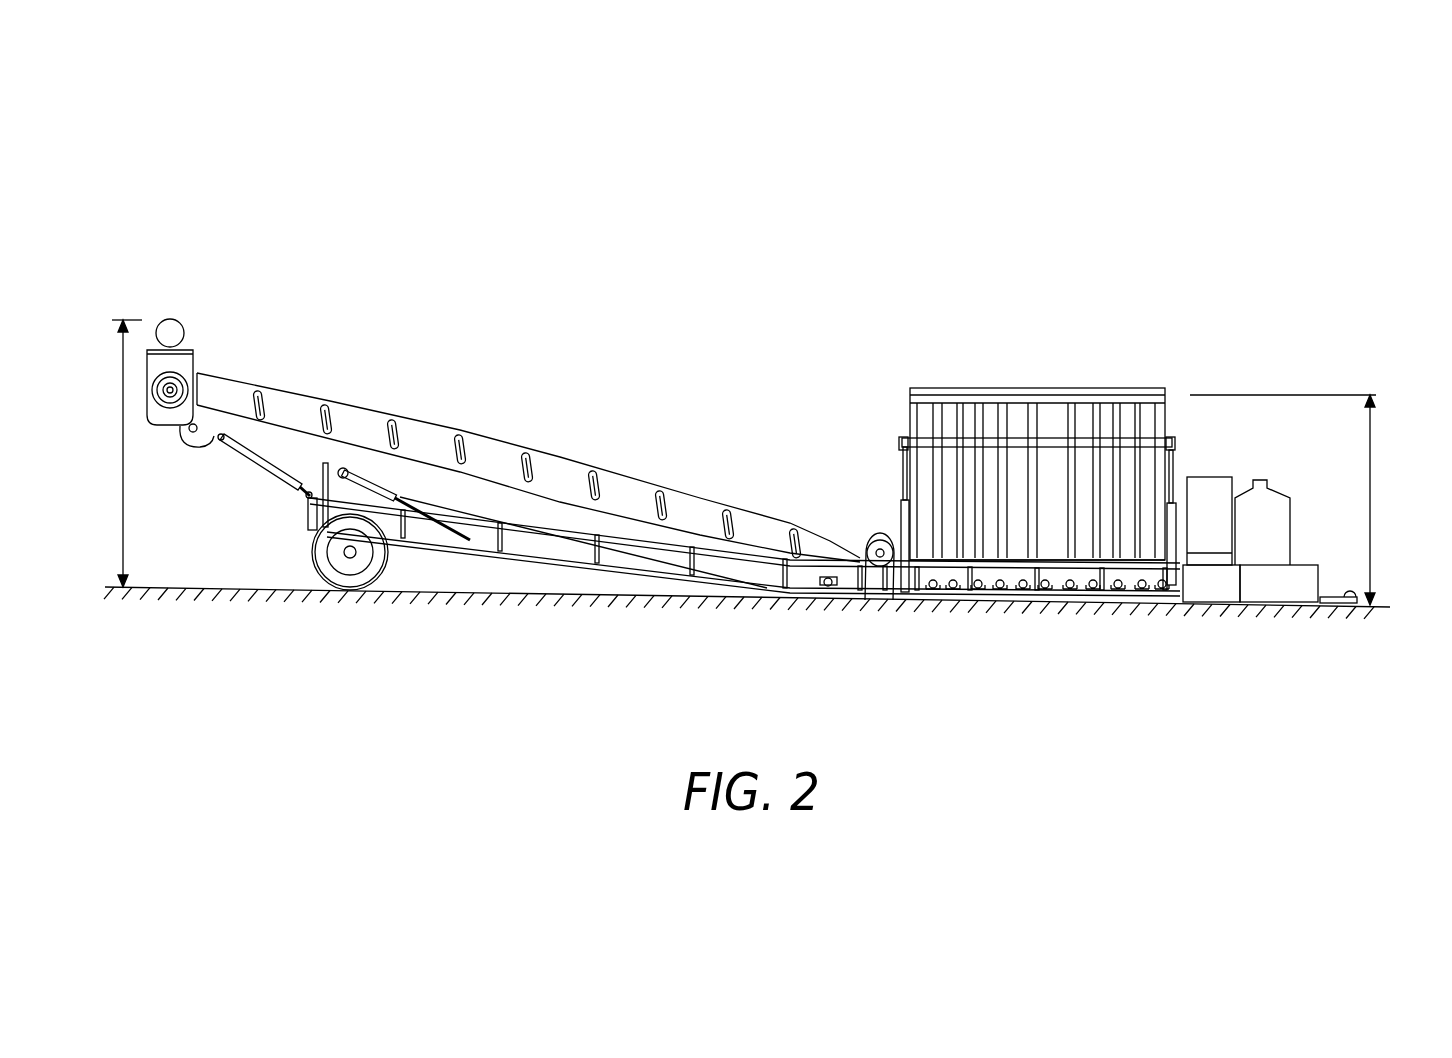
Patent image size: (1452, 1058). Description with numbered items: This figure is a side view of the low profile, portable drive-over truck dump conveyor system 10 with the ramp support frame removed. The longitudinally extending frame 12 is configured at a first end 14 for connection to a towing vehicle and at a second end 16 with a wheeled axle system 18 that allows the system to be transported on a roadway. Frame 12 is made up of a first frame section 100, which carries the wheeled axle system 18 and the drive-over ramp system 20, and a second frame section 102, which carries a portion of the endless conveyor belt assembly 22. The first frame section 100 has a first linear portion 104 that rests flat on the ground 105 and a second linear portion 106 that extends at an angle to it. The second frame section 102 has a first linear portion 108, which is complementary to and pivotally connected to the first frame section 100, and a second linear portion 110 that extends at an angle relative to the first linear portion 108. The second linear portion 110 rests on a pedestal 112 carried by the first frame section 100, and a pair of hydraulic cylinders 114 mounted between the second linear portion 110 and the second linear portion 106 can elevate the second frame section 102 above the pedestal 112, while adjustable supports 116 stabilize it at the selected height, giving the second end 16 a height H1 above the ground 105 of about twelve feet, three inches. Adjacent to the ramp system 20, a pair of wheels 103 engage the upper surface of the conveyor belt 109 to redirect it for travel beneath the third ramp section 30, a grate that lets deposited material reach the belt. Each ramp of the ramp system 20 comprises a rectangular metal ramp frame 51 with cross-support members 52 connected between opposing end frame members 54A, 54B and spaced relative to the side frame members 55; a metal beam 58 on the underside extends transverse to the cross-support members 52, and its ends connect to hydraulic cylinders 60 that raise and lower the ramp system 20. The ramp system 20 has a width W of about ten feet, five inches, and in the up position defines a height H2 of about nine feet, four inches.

The conveyor system 10 is at (758, 318).
The frame 12 is at (992, 612).
The first end 14 is at (1366, 580).
The second end 16 is at (156, 303).
The wheeled axle system 18 is at (340, 592).
The drive-over ramp system 20 is at (1172, 385).
The endless conveyor belt assembly 22 is at (630, 476).
The third ramp section 30 is at (1045, 590).
The ramp frame 51 is at (1033, 413).
The cross-support members 52 is at (998, 405).
The end frame member 54A is at (1147, 582).
The end frame member 54B is at (1145, 402).
The side frame members 55 is at (910, 405).
The metal beam 58 is at (912, 433).
The hydraulic cylinder 60 is at (900, 503).
The first frame section 100 is at (700, 590).
The second frame section 102 is at (477, 478).
The wheels 103 is at (888, 600).
The first linear portion 104 is at (767, 607).
The ground 105 is at (1093, 690).
The second linear portion 106 is at (767, 597).
The first linear portion 108 is at (908, 607).
The conveyor belt 109 is at (710, 497).
The second linear portion 110 is at (795, 483).
The pedestal 112 is at (300, 482).
The hydraulic cylinders 114 is at (410, 508).
The adjustable supports 116 is at (236, 453).
The width W is at (898, 317).
The height H1 is at (113, 453).
The height H2 is at (1299, 500).